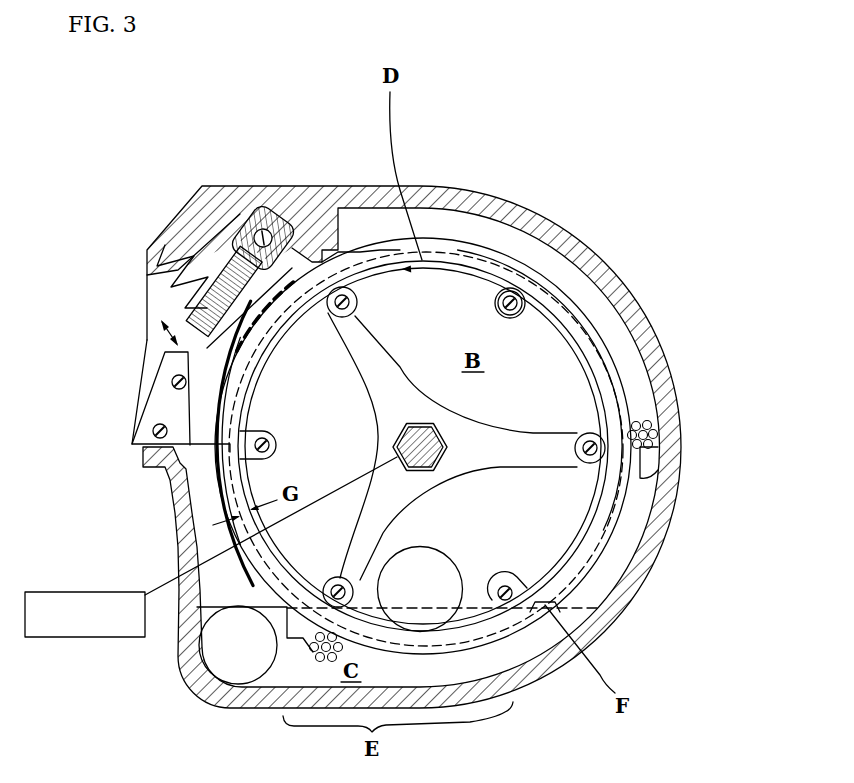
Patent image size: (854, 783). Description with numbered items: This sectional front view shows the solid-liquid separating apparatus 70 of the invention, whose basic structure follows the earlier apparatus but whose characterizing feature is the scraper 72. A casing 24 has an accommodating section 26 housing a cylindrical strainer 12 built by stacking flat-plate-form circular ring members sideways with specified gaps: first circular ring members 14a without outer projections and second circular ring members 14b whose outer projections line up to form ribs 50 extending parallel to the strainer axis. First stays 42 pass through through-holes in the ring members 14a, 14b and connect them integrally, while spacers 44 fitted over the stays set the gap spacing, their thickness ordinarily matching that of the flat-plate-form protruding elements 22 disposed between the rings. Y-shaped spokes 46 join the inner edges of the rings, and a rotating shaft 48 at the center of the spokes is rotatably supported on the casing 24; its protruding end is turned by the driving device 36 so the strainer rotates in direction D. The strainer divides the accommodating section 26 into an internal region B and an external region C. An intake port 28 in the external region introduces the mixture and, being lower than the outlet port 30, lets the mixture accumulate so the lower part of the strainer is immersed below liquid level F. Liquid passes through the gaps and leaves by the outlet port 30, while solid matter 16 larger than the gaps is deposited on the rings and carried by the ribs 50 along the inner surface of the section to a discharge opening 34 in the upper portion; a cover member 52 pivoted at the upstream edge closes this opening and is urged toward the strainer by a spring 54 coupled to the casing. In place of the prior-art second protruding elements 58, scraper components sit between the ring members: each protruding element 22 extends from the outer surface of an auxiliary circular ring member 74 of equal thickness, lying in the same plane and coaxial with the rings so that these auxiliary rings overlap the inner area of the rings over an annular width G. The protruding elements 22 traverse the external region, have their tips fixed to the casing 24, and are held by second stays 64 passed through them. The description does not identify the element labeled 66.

The strainer 12 is at (543, 443).
The first circular ring members 14a is at (617, 417).
The second circular ring members 14b is at (436, 247).
The solid matter 16 is at (645, 432).
The flat-plate-form protruding element 22 is at (185, 455).
The casing 24 is at (426, 185).
The accommodating section 26 is at (468, 233).
The intake port 28 is at (233, 665).
The outlet port 30 is at (432, 565).
The discharge opening 34 is at (257, 292).
The driving device 36 is at (128, 640).
The first stays 42 is at (495, 303).
The spacers 44 is at (515, 293).
The spokes 46 is at (598, 333).
The rotating shaft 48 is at (443, 459).
The ribs 50 is at (322, 242).
The cover member 52 is at (224, 272).
The spring 54 is at (177, 243).
The second protruding element 58 is at (286, 294).
The second stays 64 is at (172, 380).
The drive shaft 66 is at (178, 514).
The solid-liquid separating apparatus 70 is at (686, 190).
The scraper 72 is at (155, 399).
The auxiliary circular ring member 74 is at (567, 287).